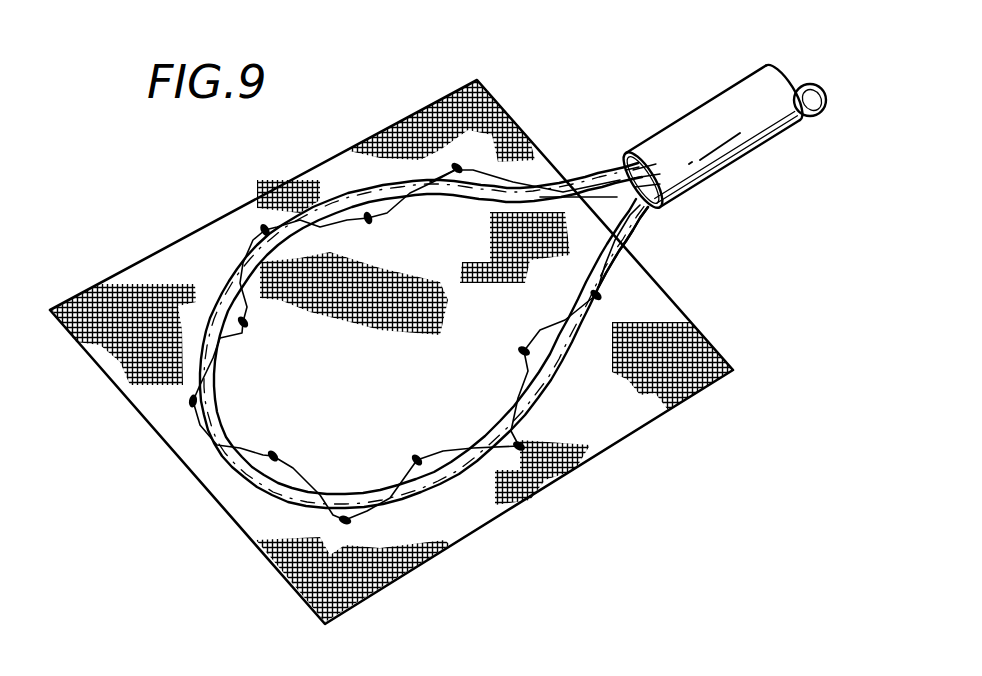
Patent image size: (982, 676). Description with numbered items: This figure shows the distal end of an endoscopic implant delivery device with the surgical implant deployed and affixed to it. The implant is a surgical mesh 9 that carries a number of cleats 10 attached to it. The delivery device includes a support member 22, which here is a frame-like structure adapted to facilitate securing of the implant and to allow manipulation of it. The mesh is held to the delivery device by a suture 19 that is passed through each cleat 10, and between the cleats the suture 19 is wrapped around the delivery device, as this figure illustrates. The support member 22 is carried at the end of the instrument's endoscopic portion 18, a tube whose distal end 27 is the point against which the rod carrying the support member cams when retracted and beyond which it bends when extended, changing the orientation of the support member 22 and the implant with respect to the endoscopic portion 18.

The surgical mesh 9 is at (100, 275).
The cleat 10 is at (185, 400).
The endoscopic portion 18 is at (765, 125).
The suture 19 is at (612, 276).
The support member 22 is at (262, 477).
The distal end of the tube 27 is at (617, 162).